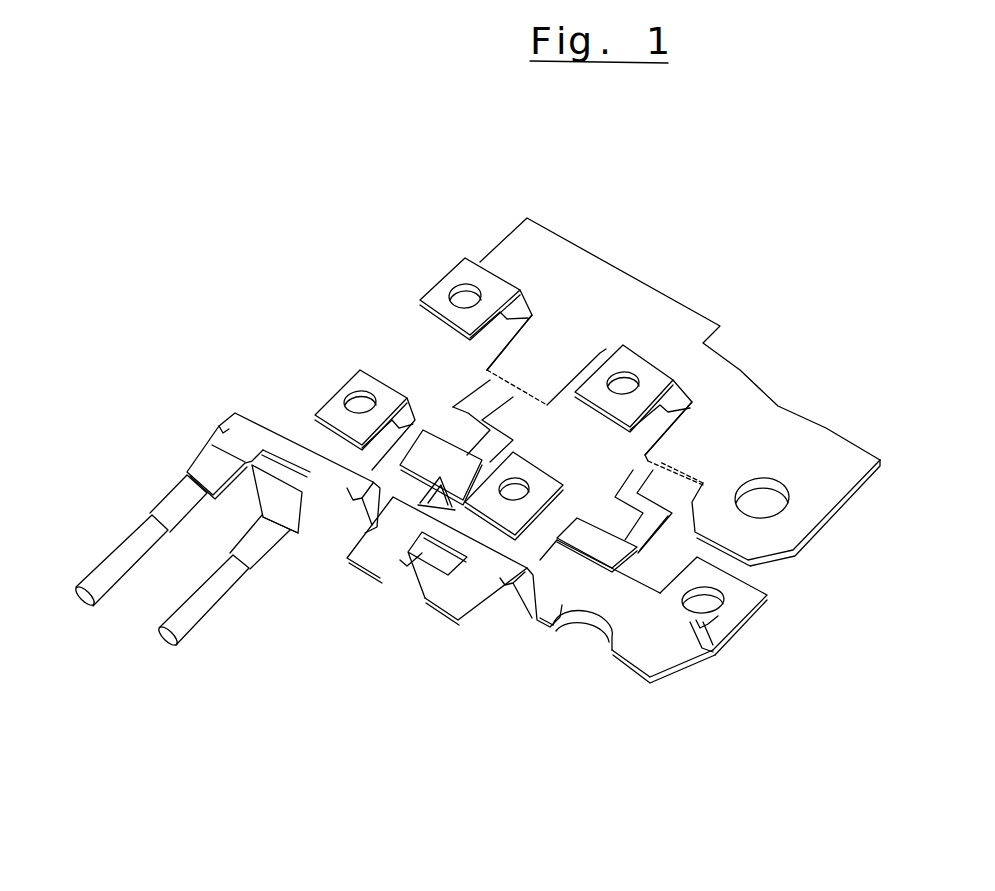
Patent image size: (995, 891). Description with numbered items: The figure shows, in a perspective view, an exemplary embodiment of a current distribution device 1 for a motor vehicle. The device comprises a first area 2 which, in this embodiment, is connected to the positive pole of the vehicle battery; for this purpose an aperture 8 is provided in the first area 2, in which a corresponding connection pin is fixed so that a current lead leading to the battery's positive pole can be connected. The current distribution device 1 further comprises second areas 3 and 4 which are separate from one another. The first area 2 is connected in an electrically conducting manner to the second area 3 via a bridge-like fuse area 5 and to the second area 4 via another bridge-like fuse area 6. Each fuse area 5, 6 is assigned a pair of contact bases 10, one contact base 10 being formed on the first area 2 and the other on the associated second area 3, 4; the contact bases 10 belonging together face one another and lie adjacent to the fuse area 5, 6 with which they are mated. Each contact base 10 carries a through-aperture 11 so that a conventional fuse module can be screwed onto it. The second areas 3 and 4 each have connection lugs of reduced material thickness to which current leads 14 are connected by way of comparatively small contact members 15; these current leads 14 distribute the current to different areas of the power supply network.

The current distribution device 1 is at (781, 545).
The first area 2 is at (557, 270).
The second area 3 is at (635, 633).
The second area 4 is at (348, 455).
The bridge-like fuse area 5 is at (638, 548).
The bridge-like fuse area 6 is at (465, 410).
The aperture 8 is at (762, 502).
The contact base 10 is at (404, 311).
The through-aperture 11 is at (460, 288).
The current lead 14 is at (198, 603).
The contact member 15 is at (268, 538).